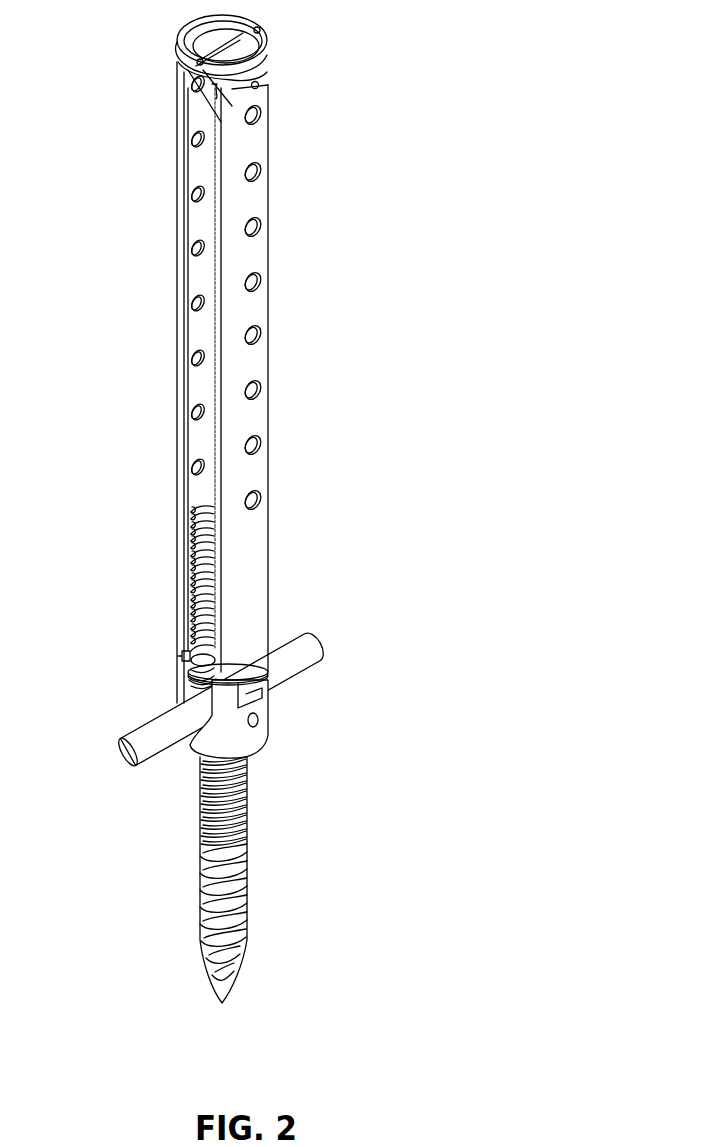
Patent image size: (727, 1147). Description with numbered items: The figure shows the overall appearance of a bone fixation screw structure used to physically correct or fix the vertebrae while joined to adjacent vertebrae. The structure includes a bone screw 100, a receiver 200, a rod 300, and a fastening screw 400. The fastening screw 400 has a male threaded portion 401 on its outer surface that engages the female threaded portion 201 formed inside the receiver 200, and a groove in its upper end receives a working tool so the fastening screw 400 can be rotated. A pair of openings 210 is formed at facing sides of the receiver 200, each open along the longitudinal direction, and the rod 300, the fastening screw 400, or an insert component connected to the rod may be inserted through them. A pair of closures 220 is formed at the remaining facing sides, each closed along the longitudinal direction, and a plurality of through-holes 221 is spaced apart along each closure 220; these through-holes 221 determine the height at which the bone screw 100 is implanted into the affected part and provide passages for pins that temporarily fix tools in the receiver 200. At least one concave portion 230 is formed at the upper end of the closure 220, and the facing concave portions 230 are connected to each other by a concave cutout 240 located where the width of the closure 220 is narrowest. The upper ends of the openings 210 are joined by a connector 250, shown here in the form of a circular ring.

The bone screw 100 is at (246, 797).
The receiver 200 is at (245, 391).
The female threaded portion 201 is at (193, 573).
The openings 210 is at (206, 229).
The closures 220 is at (292, 378).
The through-holes 221 is at (262, 278).
The concave portion 230 is at (212, 84).
The concave cutout 240 is at (258, 86).
The connector 250 is at (265, 33).
The rod 300 is at (316, 645).
The fastening screw 400 is at (180, 652).
The male threaded portion 401 is at (192, 680).